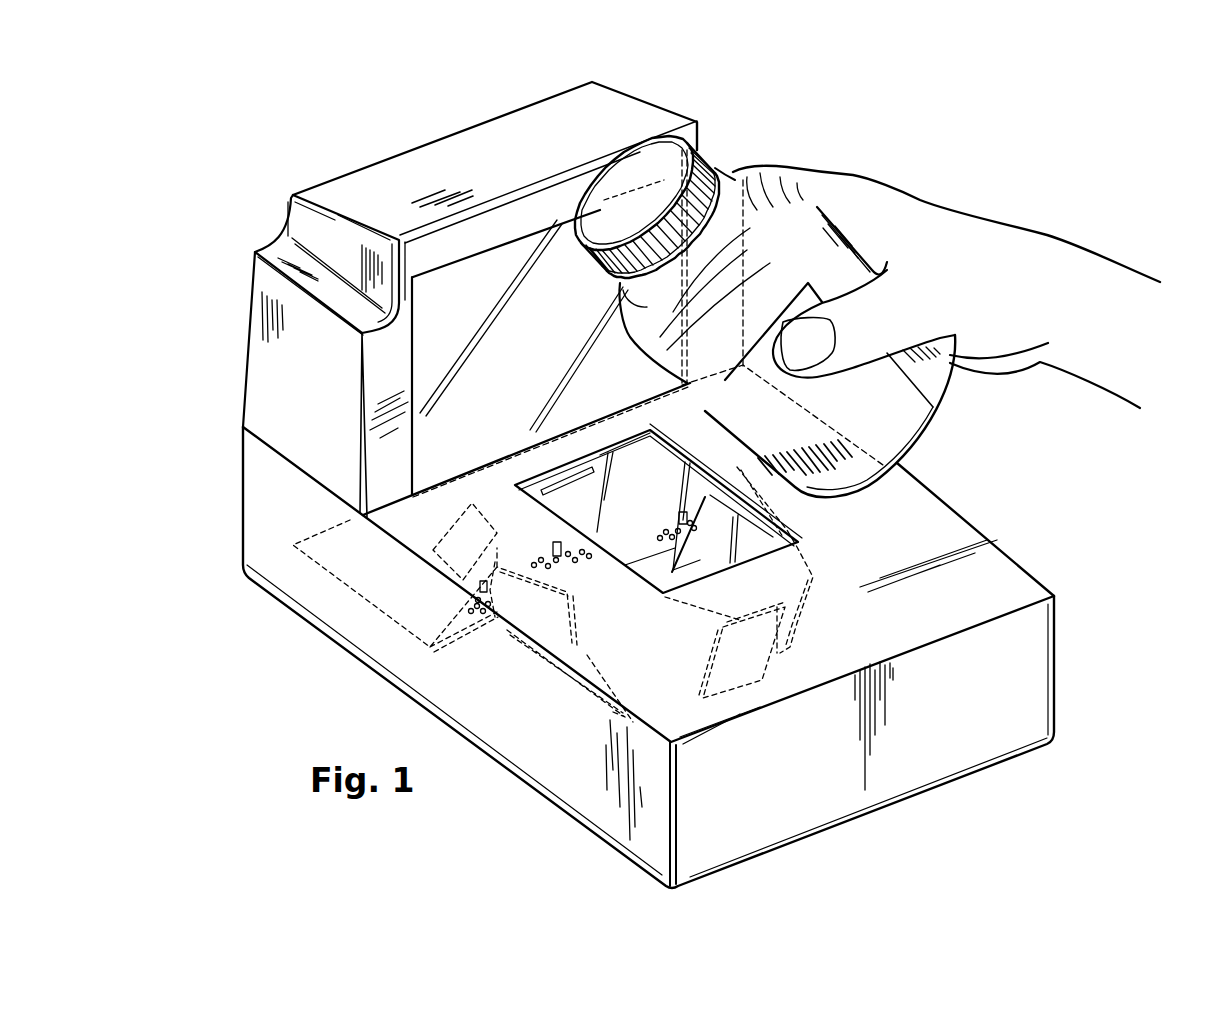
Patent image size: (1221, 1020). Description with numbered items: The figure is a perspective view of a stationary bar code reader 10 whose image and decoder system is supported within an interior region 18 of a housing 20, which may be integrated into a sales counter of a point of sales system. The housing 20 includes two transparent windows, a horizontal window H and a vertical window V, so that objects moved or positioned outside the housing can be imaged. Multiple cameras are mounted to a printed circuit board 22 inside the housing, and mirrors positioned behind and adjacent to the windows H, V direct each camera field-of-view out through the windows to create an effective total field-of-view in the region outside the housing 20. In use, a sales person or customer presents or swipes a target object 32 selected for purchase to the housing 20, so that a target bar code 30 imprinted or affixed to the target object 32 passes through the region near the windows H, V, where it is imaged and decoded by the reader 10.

The stationary bar code reader 10 is at (346, 133).
The interior region 18 is at (493, 278).
The housing 20 is at (357, 192).
The printed circuit board 22 is at (390, 592).
The target bar code 30 is at (843, 460).
The target object 32 is at (783, 238).
The vertical window V is at (490, 380).
The horizontal window H is at (625, 533).